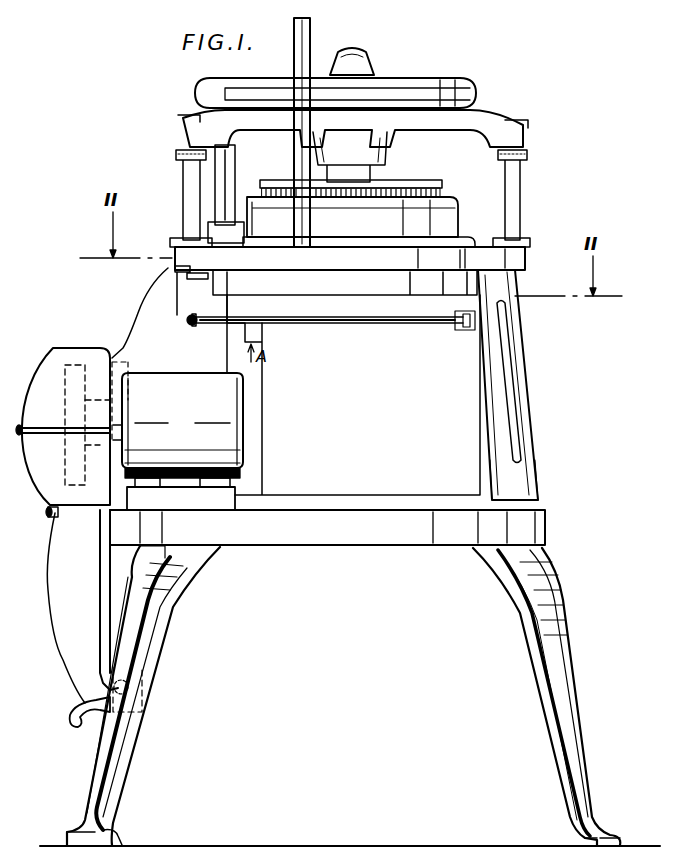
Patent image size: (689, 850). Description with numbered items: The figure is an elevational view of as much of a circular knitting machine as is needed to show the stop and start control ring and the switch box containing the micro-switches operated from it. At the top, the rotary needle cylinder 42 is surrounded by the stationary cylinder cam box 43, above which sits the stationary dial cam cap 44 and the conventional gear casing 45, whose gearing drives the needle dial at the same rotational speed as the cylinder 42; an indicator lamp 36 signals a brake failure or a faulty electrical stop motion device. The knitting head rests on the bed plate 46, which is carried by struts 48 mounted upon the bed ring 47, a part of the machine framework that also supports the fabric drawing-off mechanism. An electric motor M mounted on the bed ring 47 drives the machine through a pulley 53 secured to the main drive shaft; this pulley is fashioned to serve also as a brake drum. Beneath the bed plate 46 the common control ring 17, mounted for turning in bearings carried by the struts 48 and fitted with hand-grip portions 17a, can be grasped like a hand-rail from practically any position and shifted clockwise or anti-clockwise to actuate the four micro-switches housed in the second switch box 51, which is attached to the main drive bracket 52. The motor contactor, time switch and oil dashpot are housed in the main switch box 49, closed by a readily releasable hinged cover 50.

The indicator lamp 36 is at (355, 52).
The gear casing 45 is at (422, 83).
The stationary dial cam cap 44 is at (412, 180).
The rotary needle cylinder 42 is at (450, 194).
The stationary cylinder cam box 43 is at (460, 209).
The bed plate 46 is at (513, 260).
The second switch box 51 is at (254, 306).
The hand-grip portions 17a is at (297, 320).
The common control ring 17 is at (407, 320).
The struts 48 is at (518, 391).
The main drive bracket 52 is at (160, 334).
The pulley 53 is at (75, 368).
The electric motor M is at (222, 412).
The bed ring 47 is at (337, 528).
The hinged cover 50 is at (61, 630).
The main switch box 49 is at (118, 655).